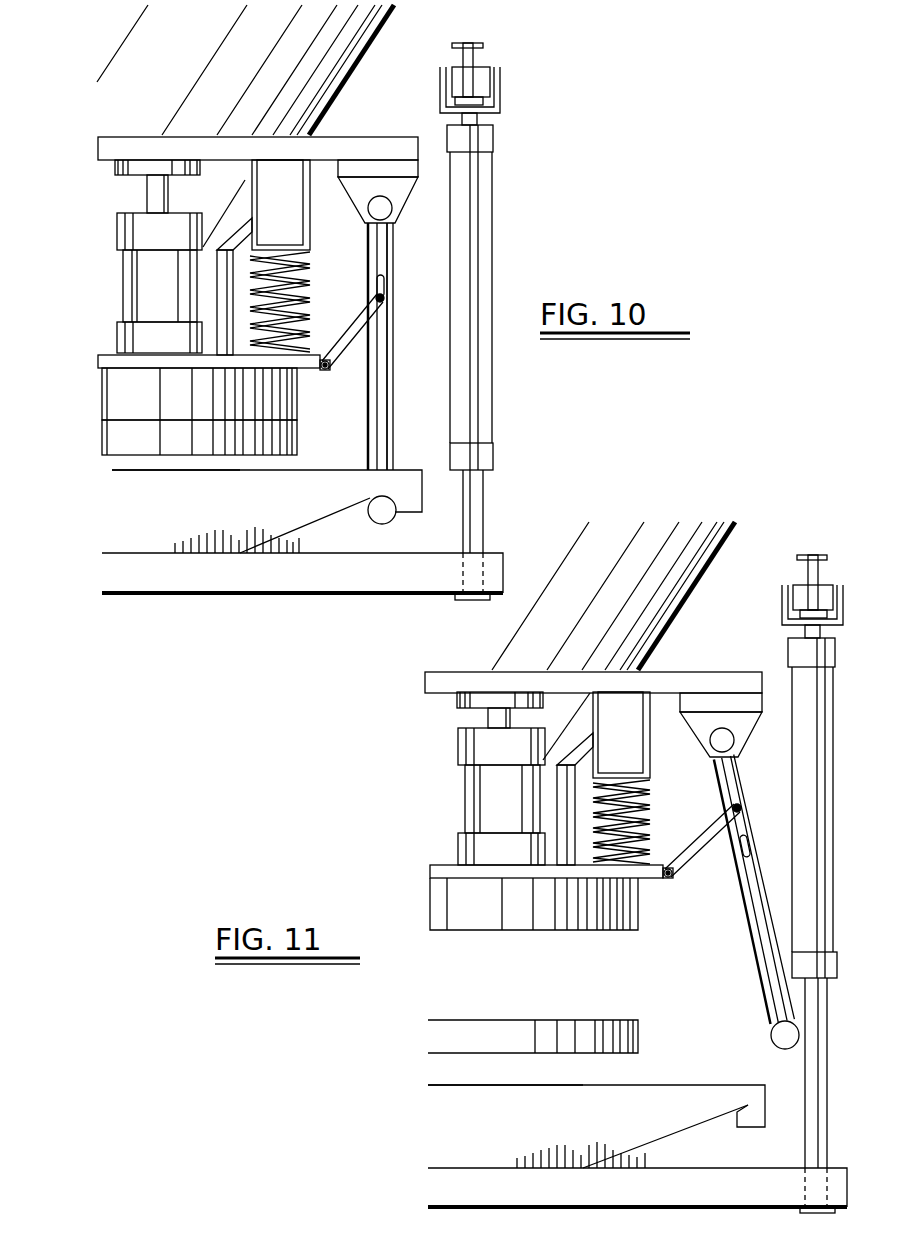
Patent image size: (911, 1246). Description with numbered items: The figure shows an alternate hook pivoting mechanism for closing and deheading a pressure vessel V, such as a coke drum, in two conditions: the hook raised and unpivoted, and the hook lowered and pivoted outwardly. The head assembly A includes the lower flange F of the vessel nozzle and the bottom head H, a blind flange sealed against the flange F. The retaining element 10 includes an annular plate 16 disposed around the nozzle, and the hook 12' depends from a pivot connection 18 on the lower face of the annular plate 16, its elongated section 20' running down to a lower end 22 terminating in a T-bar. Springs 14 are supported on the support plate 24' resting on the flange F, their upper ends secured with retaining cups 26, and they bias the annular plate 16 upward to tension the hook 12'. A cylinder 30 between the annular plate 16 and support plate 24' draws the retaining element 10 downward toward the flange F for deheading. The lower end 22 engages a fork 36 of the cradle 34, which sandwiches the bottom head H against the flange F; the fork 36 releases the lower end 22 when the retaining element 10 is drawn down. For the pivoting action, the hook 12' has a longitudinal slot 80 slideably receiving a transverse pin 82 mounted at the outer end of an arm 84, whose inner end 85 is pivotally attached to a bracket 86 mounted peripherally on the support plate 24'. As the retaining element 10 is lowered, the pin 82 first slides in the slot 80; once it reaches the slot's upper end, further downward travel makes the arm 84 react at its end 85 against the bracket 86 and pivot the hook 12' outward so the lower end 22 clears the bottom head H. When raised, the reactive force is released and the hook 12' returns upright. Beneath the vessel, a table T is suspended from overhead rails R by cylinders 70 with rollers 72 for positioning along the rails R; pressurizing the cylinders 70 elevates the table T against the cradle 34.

In FIG. 10, the retaining element 10 is at (406, 122).
In FIG. 11, the retaining element 10 is at (742, 658).
In FIG. 10, the hook 12' is at (408, 346).
In FIG. 11, the hook 12' is at (743, 910).
In FIG. 10, the springs 14 is at (283, 273).
In FIG. 11, the springs 14 is at (612, 868).
In FIG. 10, the annular plate 16 is at (128, 148).
In FIG. 11, the annular plate 16 is at (492, 683).
In FIG. 10, the pivot connection 18 is at (381, 208).
In FIG. 11, the pivot connection 18 is at (722, 740).
In FIG. 10, the elongated section 20' is at (480, 346).
In FIG. 10, the lower end 22 is at (385, 518).
In FIG. 11, the lower end 22 is at (785, 1035).
In FIG. 10, the support plate 24' is at (209, 386).
In FIG. 11, the support plate 24' is at (529, 896).
In FIG. 10, the retaining cup 26 is at (277, 205).
In FIG. 11, the retaining cup 26 is at (612, 758).
In FIG. 10, the cylinder 30 is at (153, 300).
In FIG. 11, the cylinder 30 is at (497, 812).
In FIG. 10, the cradle 34 is at (147, 518).
In FIG. 11, the cradle 34 is at (517, 1108).
In FIG. 10, the fork 36 is at (418, 490).
In FIG. 11, the fork 36 is at (747, 1105).
In FIG. 10, the cylinder 70 is at (472, 252).
In FIG. 11, the cylinder 70 is at (807, 877).
In FIG. 10, the roller 72 is at (480, 80).
In FIG. 11, the roller 72 is at (797, 592).
In FIG. 10, the longitudinal slot 80 is at (383, 283).
In FIG. 11, the longitudinal slot 80 is at (745, 845).
In FIG. 10, the transverse pin 82 is at (385, 305).
In FIG. 11, the transverse pin 82 is at (739, 803).
In FIG. 10, the arm 84 is at (352, 325).
In FIG. 11, the arm 84 is at (700, 838).
In FIG. 10, the inner end 85 is at (330, 375).
In FIG. 11, the inner end 85 is at (670, 878).
In FIG. 10, the bracket 86 is at (320, 375).
In FIG. 11, the bracket 86 is at (665, 885).
In FIG. 10, the head assembly A is at (309, 470).
In FIG. 11, the head assembly A is at (649, 1064).
In FIG. 10, the lower flange F is at (118, 383).
In FIG. 11, the lower flange F is at (458, 890).
In FIG. 10, the bottom head H is at (127, 438).
In FIG. 11, the bottom head H is at (550, 1035).
In FIG. 10, the overhead rails R is at (473, 40).
In FIG. 11, the overhead rails R is at (815, 553).
In FIG. 10, the table T is at (325, 585).
In FIG. 11, the table T is at (503, 1190).
In FIG. 10, the pressure vessel V is at (293, 97).
In FIG. 11, the pressure vessel V is at (633, 627).